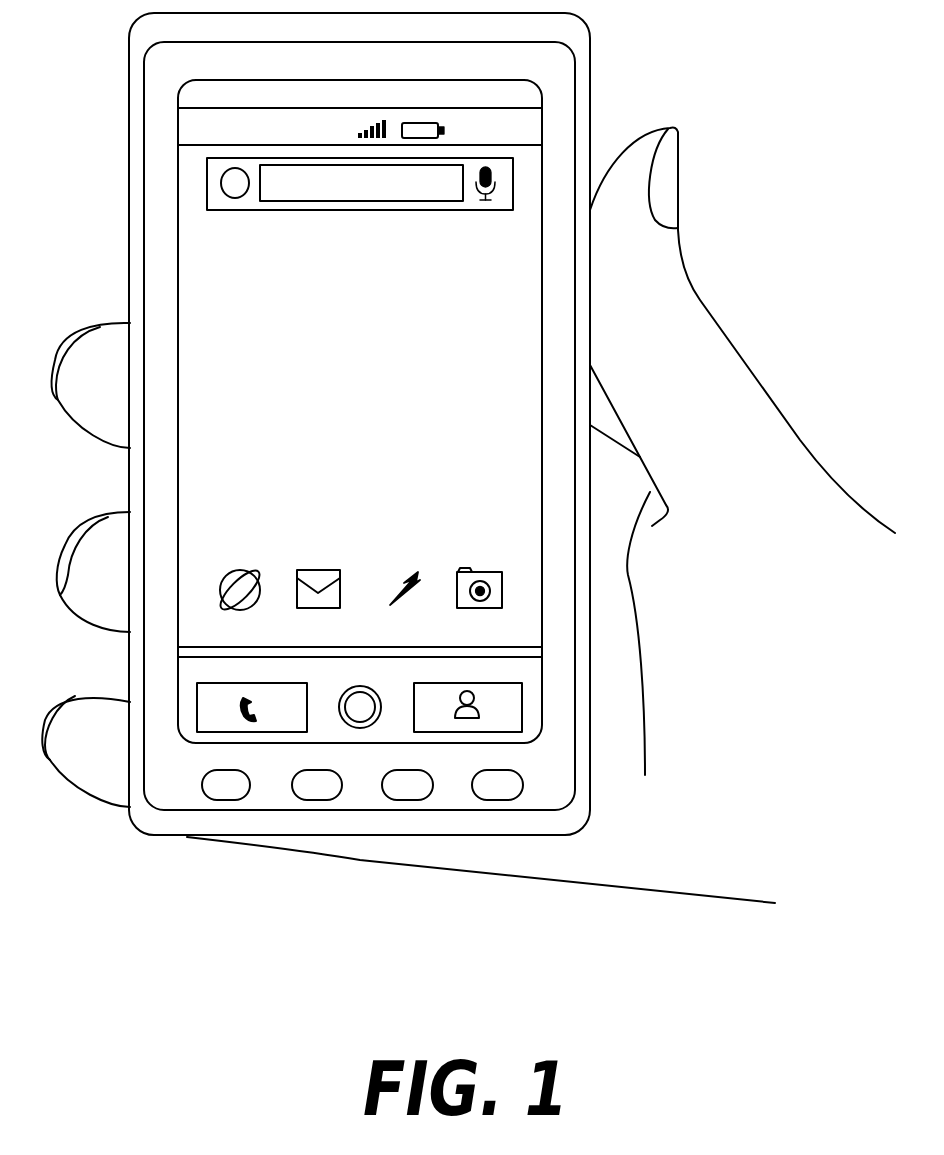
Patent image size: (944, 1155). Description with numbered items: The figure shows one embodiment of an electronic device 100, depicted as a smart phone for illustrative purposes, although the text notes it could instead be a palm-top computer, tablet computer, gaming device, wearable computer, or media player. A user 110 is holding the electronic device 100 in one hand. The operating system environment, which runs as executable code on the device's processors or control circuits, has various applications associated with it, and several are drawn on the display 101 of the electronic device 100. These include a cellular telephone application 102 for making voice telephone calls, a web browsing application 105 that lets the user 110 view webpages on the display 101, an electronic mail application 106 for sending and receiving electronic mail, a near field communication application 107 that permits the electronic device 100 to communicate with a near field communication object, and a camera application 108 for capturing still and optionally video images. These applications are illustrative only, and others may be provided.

The electronic device 100 is at (616, 91).
The display 101 is at (345, 320).
The cellular telephone application 102 is at (215, 720).
The web browsing application 105 is at (242, 568).
The electronic mail application 106 is at (320, 568).
The near field communication application 107 is at (412, 573).
The camera application 108 is at (465, 572).
The user 110 is at (677, 315).